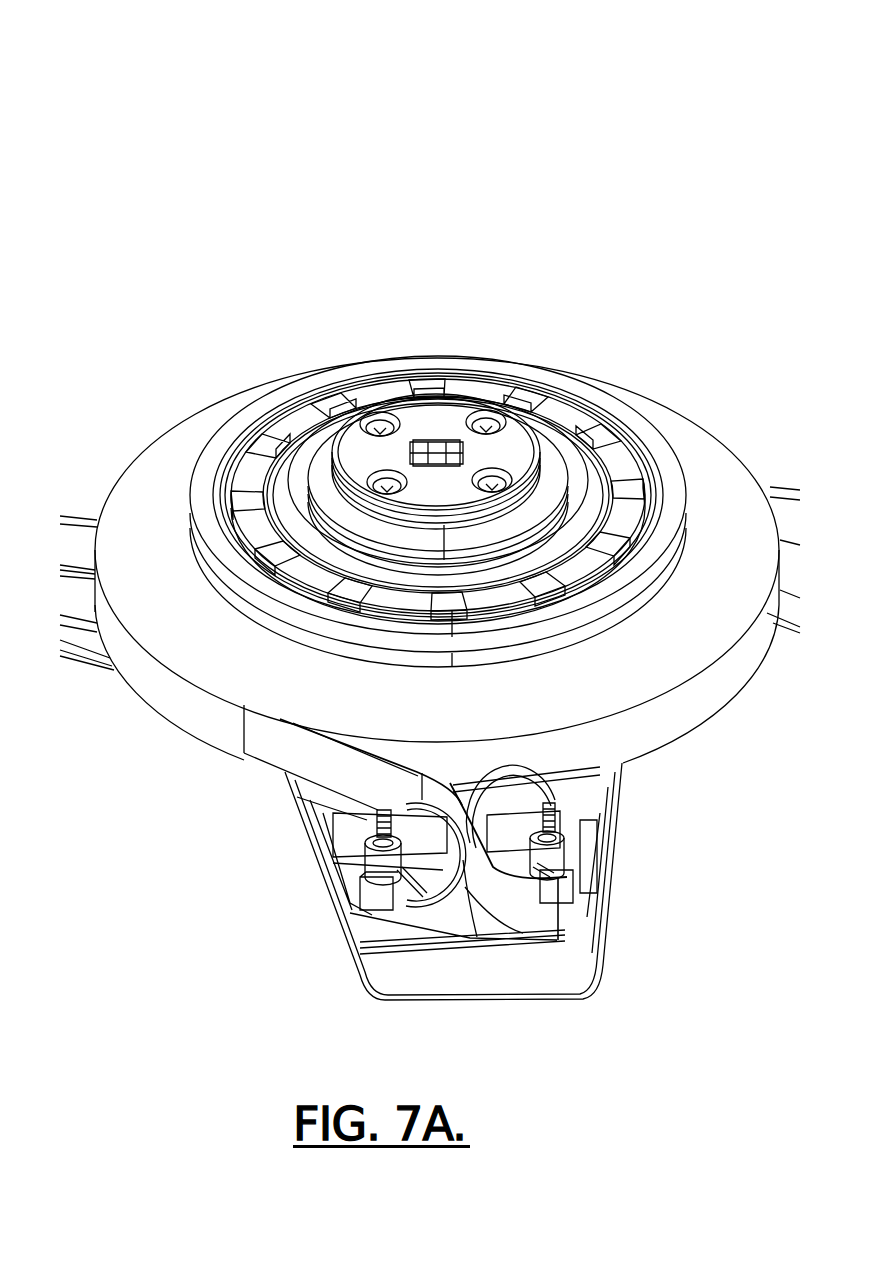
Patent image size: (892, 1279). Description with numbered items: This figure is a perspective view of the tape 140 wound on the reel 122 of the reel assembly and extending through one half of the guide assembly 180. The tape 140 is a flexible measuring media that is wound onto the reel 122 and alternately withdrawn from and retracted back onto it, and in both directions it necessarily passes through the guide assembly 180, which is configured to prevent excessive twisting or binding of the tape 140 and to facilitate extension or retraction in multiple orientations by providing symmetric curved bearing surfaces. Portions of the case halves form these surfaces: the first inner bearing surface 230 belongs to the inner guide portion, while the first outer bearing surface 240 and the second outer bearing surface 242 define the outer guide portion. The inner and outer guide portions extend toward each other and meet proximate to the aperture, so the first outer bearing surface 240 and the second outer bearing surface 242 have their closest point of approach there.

The first inner bearing surface 230 is at (208, 160).
The guide assembly 180 is at (638, 140).
The reel 122 is at (330, 432).
The tape 140 is at (355, 772).
The first outer bearing surface 240 is at (428, 912).
The second outer bearing surface 242 is at (570, 930).